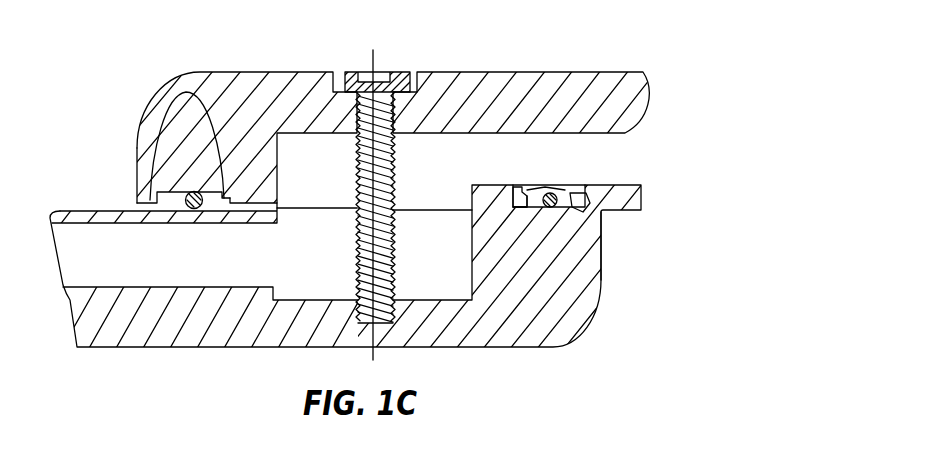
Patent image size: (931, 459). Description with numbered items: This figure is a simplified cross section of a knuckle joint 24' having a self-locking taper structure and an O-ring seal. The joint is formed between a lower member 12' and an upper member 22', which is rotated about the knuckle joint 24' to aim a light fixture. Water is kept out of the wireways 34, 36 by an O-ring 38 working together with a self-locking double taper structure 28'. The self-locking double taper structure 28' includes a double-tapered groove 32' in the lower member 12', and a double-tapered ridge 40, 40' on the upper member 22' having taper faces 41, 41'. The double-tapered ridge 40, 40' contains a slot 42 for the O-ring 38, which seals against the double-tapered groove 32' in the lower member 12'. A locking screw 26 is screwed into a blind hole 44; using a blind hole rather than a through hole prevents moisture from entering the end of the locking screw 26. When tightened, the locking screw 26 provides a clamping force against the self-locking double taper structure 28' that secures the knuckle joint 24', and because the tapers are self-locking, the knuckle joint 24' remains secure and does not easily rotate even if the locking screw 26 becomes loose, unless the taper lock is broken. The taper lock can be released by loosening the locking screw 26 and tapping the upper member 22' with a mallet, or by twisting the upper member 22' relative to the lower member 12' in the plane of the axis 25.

The lower member 12' is at (344, 122).
The upper member 22' is at (391, 285).
The knuckle joint 24' is at (488, 34).
The axis 25 is at (378, 70).
The locking screw 26 is at (347, 72).
The self-locking double taper structure 28' is at (293, 190).
The double-tapered groove 32' is at (109, 162).
The wireway 34 is at (555, 170).
The wireway 36 is at (165, 266).
The O-ring 38 is at (601, 232).
The double-tapered ridge 40 is at (374, 180).
The double-tapered ridge 40' is at (317, 132).
The taper face 41 is at (473, 192).
The taper face 41' is at (632, 195).
The slot 42 is at (545, 190).
The blind hole 44 is at (380, 323).